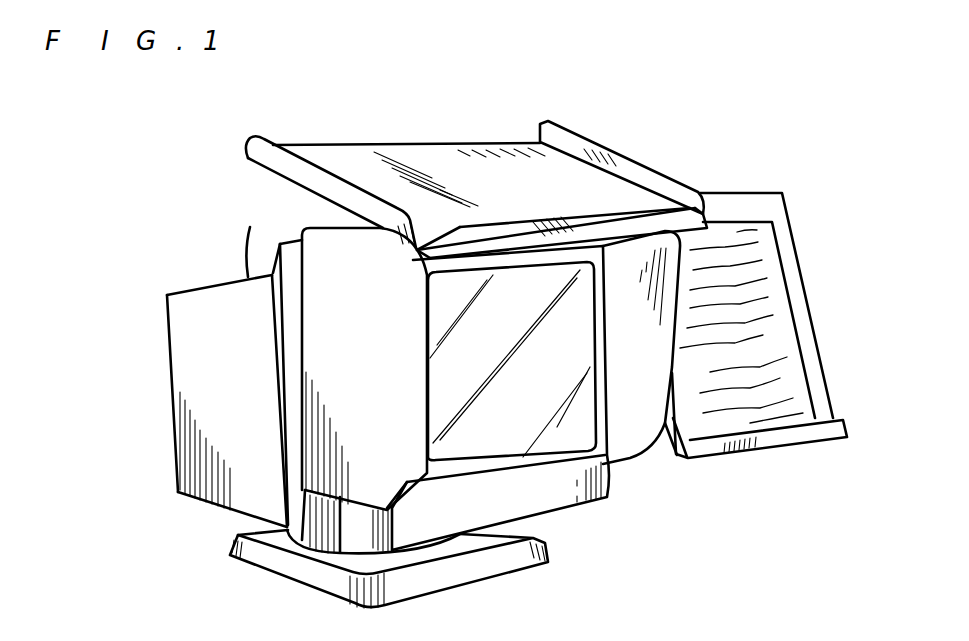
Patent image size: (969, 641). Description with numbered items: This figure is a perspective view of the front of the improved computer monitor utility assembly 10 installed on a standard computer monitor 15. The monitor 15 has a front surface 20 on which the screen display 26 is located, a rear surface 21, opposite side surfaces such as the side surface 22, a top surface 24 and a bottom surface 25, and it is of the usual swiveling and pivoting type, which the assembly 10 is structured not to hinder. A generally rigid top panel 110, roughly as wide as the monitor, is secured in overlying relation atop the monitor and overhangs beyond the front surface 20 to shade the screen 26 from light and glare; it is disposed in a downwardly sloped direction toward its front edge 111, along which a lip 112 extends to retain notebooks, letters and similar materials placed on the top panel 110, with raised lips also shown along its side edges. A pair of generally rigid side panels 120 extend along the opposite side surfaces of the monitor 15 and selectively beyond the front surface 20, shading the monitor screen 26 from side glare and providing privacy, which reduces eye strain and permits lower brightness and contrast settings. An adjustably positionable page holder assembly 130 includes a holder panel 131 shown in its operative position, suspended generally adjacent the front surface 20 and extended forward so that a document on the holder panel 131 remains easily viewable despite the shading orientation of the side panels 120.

The improved computer monitor utility assembly 10 is at (176, 159).
The computer monitor 15 is at (212, 466).
The front surface 20 is at (599, 458).
The rear surface 21 is at (168, 367).
The side surface 22 is at (243, 379).
The top surface 24 is at (290, 240).
The bottom surface 25 is at (224, 510).
The screen display 26 is at (538, 400).
The top panel 110 is at (523, 204).
The front edge 111 is at (430, 250).
The lip 112 is at (637, 214).
The side panels 120 is at (382, 325).
The page holder assembly 130 is at (796, 223).
The holder panel 131 is at (751, 203).